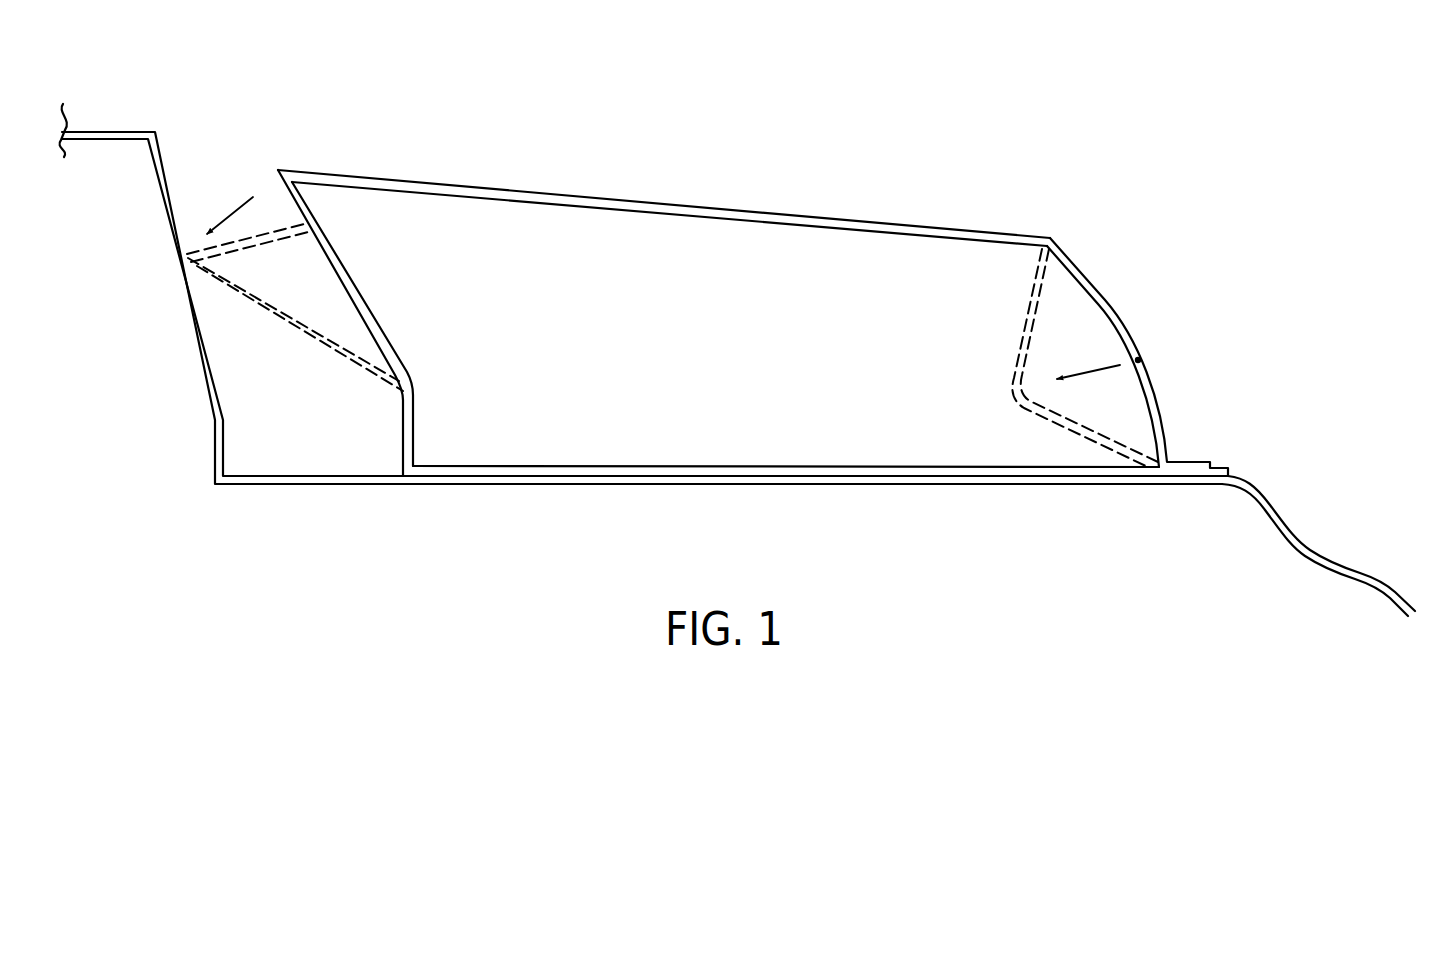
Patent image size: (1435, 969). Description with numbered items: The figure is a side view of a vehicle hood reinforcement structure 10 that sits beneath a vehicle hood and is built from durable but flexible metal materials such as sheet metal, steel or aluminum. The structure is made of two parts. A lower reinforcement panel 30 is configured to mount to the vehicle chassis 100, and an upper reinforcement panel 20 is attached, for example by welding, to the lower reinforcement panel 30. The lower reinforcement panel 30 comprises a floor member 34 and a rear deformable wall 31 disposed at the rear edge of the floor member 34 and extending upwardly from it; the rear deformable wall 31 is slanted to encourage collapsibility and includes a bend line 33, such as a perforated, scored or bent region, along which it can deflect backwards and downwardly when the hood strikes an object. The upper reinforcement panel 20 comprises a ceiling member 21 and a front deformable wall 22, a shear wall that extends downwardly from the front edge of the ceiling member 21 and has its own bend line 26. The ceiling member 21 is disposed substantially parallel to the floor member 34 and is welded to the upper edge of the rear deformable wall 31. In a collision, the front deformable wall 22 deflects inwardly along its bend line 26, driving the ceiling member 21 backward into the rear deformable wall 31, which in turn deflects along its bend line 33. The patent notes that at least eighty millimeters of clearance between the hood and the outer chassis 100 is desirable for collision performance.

The vehicle hood reinforcement structure 10 is at (528, 536).
The upper reinforcement panel 20 is at (753, 300).
The ceiling member 21 is at (803, 212).
The front deformable wall 22 is at (1119, 308).
The bend line 26 is at (1141, 361).
The lower reinforcement panel 30 is at (718, 323).
The rear deformable wall 31 is at (396, 355).
The bend line 33 is at (411, 392).
The floor member 34 is at (613, 467).
The vehicle chassis 100 is at (310, 490).